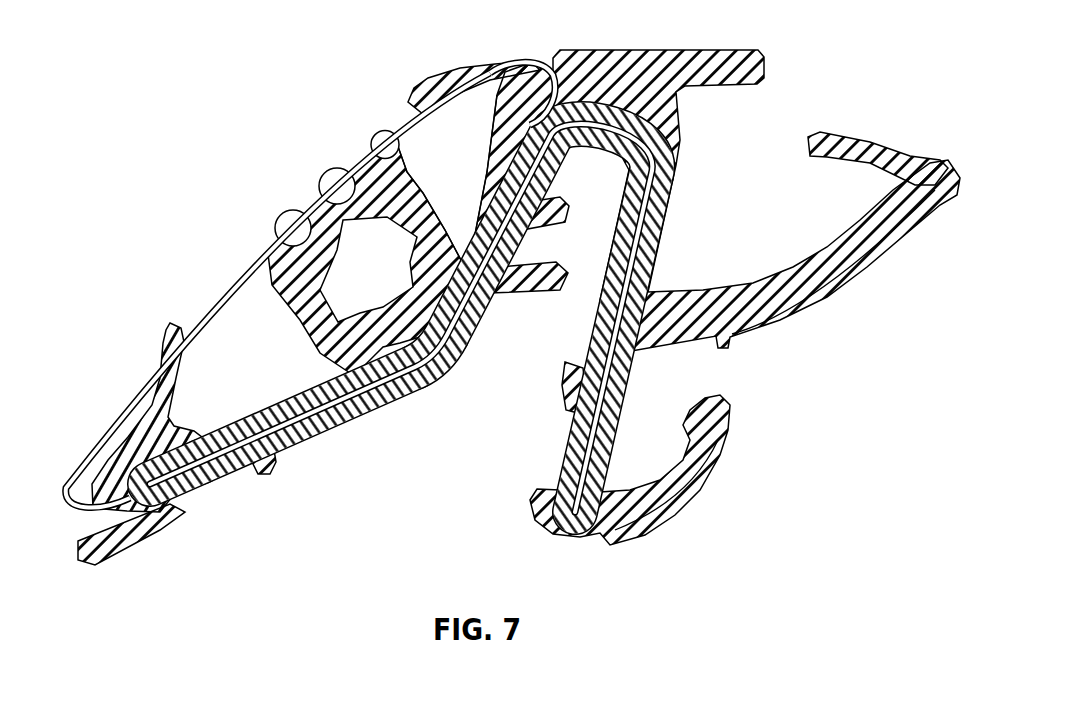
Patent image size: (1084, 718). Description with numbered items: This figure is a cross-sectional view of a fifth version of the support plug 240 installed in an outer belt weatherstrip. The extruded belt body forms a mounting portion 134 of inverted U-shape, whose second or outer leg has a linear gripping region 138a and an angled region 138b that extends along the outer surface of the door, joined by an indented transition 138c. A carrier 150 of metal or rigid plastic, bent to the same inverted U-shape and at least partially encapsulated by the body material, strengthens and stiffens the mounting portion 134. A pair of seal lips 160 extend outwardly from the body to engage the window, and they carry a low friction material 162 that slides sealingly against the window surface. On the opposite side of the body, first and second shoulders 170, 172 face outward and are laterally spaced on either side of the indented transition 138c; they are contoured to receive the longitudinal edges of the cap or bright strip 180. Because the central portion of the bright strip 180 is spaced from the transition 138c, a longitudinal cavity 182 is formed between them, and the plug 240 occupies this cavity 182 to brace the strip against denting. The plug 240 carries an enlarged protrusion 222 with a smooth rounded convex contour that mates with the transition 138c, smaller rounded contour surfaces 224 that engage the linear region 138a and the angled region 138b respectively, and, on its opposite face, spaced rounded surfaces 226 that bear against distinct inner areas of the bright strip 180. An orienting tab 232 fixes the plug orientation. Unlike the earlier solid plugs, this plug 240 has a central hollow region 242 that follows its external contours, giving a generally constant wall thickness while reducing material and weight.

The mounting portion 134 is at (663, 238).
The linear gripping region 138a is at (516, 198).
The angled region 138b is at (280, 452).
The transition 138c is at (462, 345).
The carrier 150 is at (225, 458).
The seal lips 160 is at (820, 270).
The low friction material 162 is at (860, 287).
The first shoulder 170 is at (493, 68).
The second shoulder 172 is at (140, 435).
The cap or bright strip 180 is at (200, 320).
The cavity 182 is at (249, 395).
The enlarged protrusion 222 is at (450, 352).
The rounded contour surfaces 224 is at (445, 225).
The rounded surfaces 226 is at (318, 235).
The orienting tab 232 is at (400, 143).
The plug 240 is at (273, 283).
The central hollow region 242 is at (387, 267).